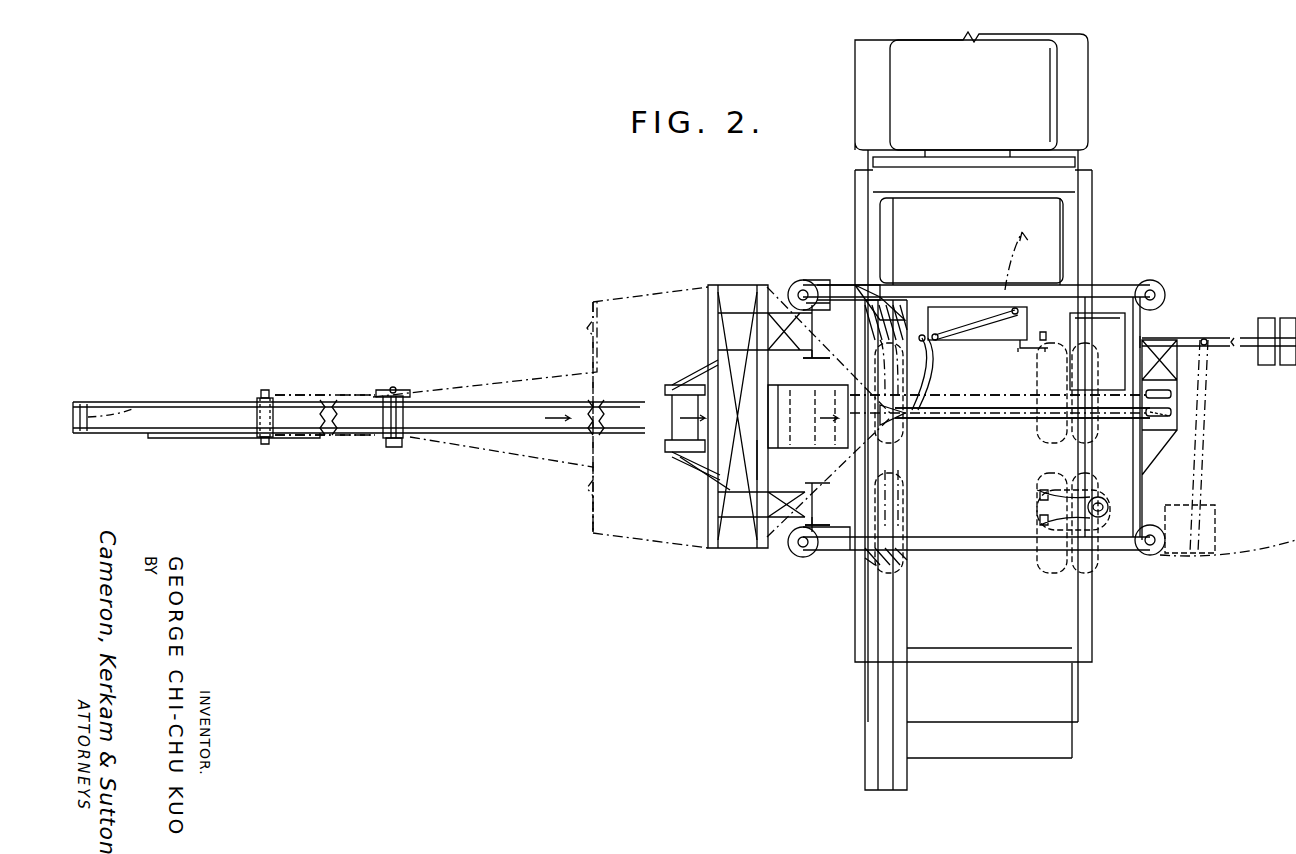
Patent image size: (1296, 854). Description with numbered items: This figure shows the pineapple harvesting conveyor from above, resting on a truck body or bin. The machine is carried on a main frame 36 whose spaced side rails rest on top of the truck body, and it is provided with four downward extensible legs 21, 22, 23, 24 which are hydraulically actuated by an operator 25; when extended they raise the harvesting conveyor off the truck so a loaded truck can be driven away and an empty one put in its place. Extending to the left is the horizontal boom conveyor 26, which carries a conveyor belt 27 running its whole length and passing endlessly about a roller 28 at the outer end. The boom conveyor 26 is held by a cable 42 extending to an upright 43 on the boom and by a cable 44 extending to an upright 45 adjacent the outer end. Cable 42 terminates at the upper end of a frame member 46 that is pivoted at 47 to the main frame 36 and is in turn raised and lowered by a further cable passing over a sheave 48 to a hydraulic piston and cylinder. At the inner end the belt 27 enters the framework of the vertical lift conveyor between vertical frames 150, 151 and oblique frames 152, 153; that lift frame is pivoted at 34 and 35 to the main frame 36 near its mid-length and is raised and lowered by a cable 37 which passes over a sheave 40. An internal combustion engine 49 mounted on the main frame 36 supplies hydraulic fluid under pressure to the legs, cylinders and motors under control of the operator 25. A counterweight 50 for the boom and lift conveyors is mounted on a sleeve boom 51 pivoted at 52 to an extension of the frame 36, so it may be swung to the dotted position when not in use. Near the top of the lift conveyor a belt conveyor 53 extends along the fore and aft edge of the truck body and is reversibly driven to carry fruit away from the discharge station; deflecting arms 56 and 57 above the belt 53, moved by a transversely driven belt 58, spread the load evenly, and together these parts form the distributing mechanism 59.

The downward extensible leg 21 is at (800, 545).
The downward extensible leg 22 is at (1150, 545).
The downward extensible leg 23 is at (803, 292).
The downward extensible leg 24 is at (1148, 292).
The operator 25 is at (1100, 495).
The horizontal boom conveyor 26 is at (344, 440).
The conveyor belt 27 is at (190, 420).
The roller 28 is at (135, 408).
The pivot 34 is at (826, 506).
The pivot 35 is at (812, 322).
The main frame 36 is at (870, 292).
The cable 37 is at (978, 395).
The sheave 40 is at (1165, 392).
The cable 42 is at (622, 298).
The upright 43 is at (400, 392).
The cable 44 is at (316, 395).
The upright 45 is at (269, 387).
The frame member 46 is at (764, 462).
The pivot 47 is at (982, 418).
The sheave 48 is at (1165, 412).
The internal combustion engine 49 is at (1110, 330).
The counterweight 50 is at (1286, 318).
The sleeve boom 51 is at (1220, 338).
The pivot 52 is at (1203, 339).
The belt conveyor 53 is at (890, 458).
The deflecting arm 56 is at (930, 370).
The deflecting arm 57 is at (816, 352).
The transverse belt 58 is at (990, 340).
The distributing mechanism 59 is at (1020, 322).
The vertical frame 150 is at (695, 457).
The vertical frame 151 is at (668, 392).
The oblique frame 152 is at (703, 472).
The oblique frame 153 is at (700, 372).